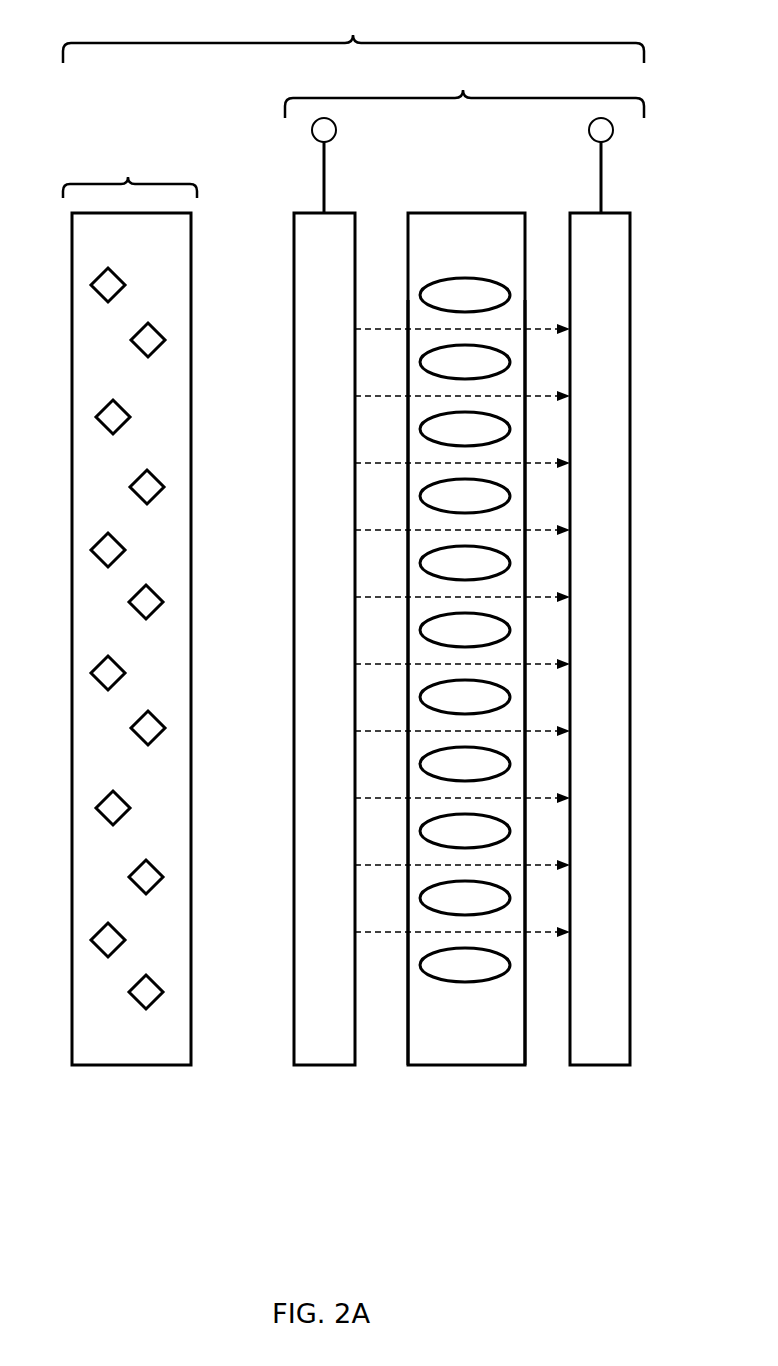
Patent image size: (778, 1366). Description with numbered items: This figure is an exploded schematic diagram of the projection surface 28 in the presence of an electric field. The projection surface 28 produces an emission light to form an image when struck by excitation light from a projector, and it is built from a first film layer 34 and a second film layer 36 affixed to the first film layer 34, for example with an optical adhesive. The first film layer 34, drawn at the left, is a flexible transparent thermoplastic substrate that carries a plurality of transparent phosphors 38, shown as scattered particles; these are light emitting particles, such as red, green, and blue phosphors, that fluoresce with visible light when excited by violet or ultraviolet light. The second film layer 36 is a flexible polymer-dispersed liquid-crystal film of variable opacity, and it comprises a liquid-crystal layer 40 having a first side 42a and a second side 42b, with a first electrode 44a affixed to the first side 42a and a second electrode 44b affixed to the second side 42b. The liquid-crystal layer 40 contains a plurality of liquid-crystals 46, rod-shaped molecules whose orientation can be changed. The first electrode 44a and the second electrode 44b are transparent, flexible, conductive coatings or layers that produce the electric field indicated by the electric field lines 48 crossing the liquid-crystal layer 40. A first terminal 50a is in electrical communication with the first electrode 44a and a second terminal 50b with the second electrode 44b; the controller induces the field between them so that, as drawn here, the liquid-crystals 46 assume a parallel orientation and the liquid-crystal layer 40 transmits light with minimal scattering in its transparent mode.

The projection surface 28 is at (353, 32).
The first film layer 34 is at (130, 605).
The second film layer 36 is at (464, 88).
The transparent phosphors 38 is at (134, 347).
The liquid-crystal layer 40 is at (445, 211).
The first side 42a is at (408, 1040).
The second side 42b is at (525, 1040).
The first electrode 44a is at (305, 650).
The second electrode 44b is at (581, 650).
The liquid-crystals 46 is at (467, 278).
The electric field lines 48 is at (386, 325).
The first terminal 50a is at (313, 138).
The second terminal 50b is at (612, 137).